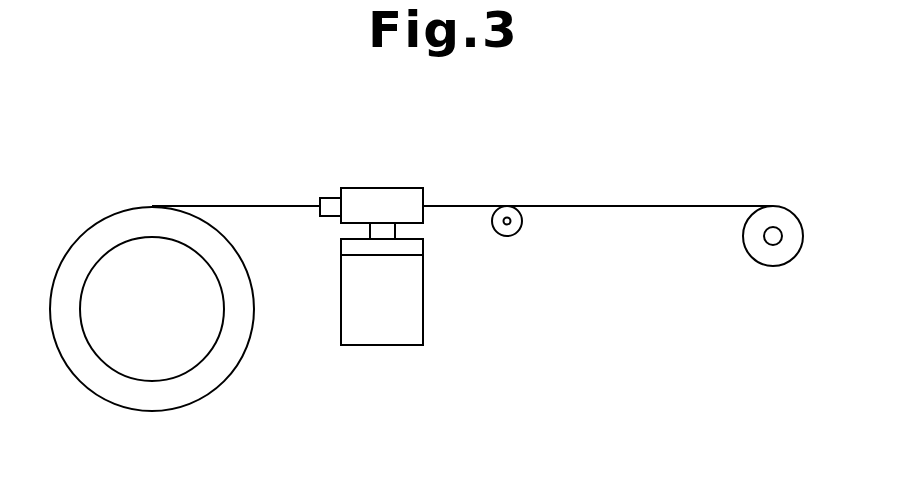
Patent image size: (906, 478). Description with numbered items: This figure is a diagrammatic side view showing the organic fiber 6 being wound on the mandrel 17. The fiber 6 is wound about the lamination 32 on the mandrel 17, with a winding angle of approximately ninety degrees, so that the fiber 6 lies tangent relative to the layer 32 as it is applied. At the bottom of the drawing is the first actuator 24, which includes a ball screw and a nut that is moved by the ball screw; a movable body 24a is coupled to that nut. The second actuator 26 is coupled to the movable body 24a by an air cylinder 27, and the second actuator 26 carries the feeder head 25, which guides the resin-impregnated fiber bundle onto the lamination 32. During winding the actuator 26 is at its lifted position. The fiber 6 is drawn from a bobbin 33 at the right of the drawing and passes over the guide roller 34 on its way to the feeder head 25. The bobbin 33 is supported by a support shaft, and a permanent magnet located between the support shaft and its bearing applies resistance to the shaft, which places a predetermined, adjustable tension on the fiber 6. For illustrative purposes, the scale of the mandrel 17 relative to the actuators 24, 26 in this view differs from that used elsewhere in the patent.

The organic fiber 6 is at (465, 205).
The mandrel 17 is at (181, 370).
The first actuator 24 is at (418, 293).
The movable body 24a is at (420, 247).
The feeder head 25 is at (333, 198).
The second actuator 26 is at (382, 192).
The air cylinder 27 is at (368, 227).
The lamination 32 is at (245, 345).
The bobbin 33 is at (778, 258).
The guide roller 34 is at (522, 223).